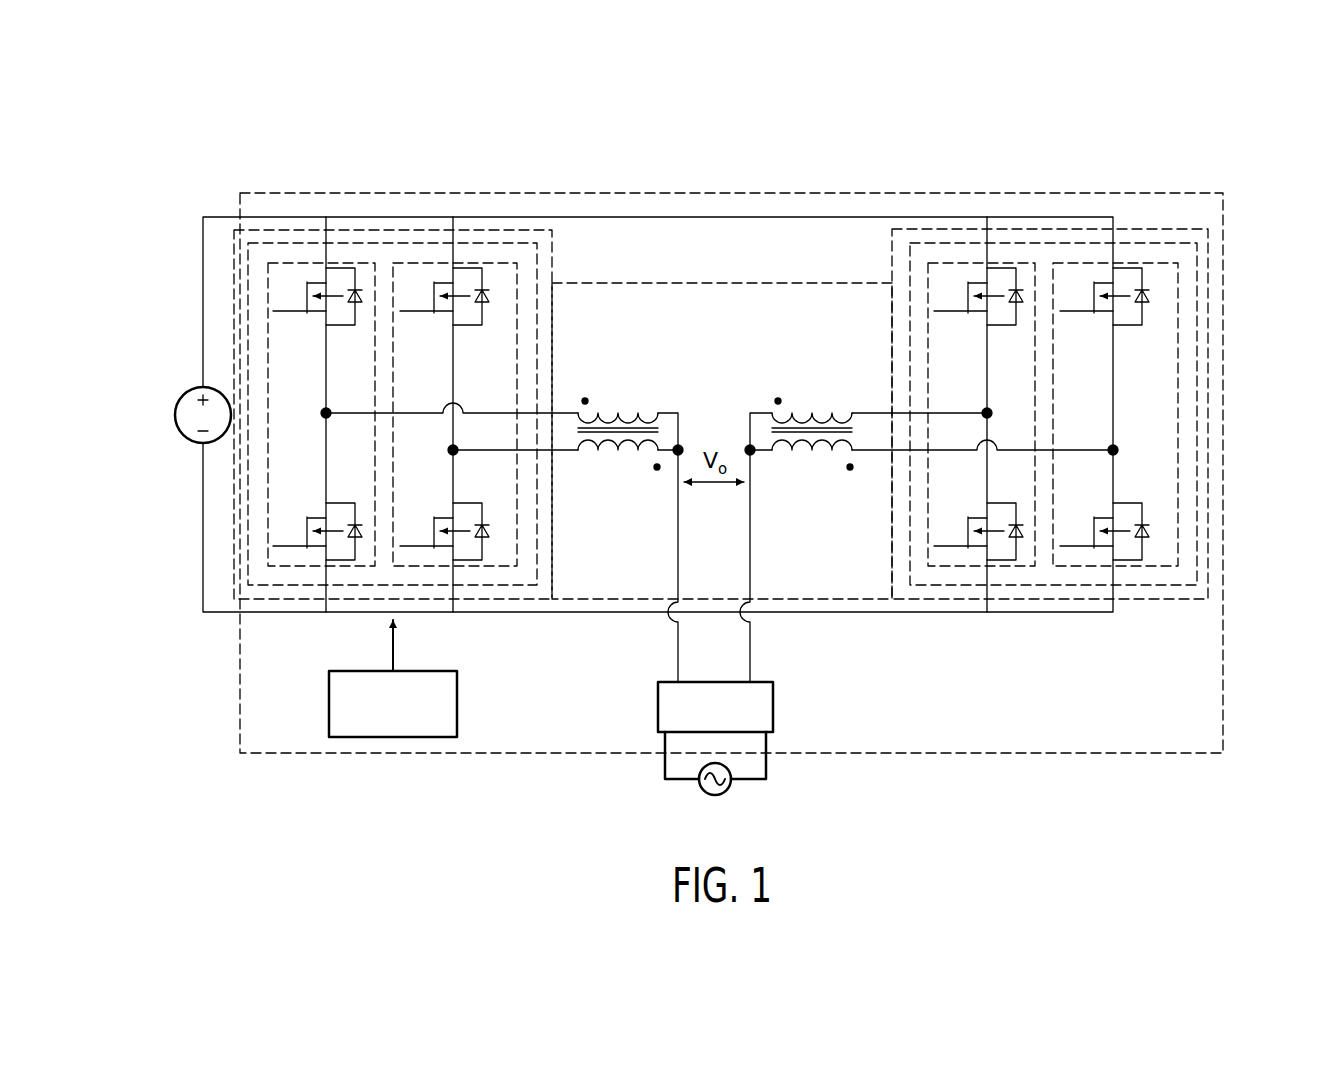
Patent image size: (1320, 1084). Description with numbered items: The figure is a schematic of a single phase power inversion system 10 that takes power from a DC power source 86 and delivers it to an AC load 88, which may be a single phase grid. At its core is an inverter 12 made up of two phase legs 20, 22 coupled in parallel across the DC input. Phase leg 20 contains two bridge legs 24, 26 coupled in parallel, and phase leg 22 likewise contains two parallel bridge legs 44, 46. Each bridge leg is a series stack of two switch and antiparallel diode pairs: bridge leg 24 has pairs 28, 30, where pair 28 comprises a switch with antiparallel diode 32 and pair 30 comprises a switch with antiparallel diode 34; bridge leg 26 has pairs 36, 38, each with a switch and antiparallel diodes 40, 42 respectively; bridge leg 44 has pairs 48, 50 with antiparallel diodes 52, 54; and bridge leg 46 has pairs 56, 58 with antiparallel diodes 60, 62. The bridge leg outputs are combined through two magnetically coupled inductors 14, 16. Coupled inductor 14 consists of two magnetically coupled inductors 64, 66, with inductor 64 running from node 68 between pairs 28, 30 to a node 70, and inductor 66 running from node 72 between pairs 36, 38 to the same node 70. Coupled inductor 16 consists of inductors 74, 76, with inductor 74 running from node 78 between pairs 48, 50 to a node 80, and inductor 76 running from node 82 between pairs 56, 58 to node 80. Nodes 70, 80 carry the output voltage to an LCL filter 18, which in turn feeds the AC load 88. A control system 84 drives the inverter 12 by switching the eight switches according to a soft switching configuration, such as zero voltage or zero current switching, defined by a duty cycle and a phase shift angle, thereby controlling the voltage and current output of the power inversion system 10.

The single phase power inversion system 10 is at (452, 192).
The inverter 12 is at (1074, 396).
The magnetically coupled inductor 14 is at (619, 428).
The magnetically coupled inductor 16 is at (805, 421).
The LCL filter 18 is at (773, 707).
The phase leg 20 is at (540, 383).
The phase leg 22 is at (1158, 242).
The bridge leg 24 is at (270, 287).
The bridge leg 26 is at (537, 283).
The switch and antiparallel diode pair 28 is at (301, 322).
The switch and antiparallel diode pair 30 is at (306, 512).
The antiparallel diode 32 is at (364, 304).
The antiparallel diode 34 is at (362, 530).
The switch and antiparallel diode pair 36 is at (428, 322).
The switch and antiparallel diode pair 38 is at (430, 512).
The antiparallel diode 40 is at (487, 300).
The antiparallel diode 42 is at (488, 528).
The bridge leg 44 is at (914, 390).
The bridge leg 46 is at (1178, 280).
The switch and antiparallel diode pair 48 is at (965, 322).
The switch and antiparallel diode pair 50 is at (979, 550).
The antiparallel diode 52 is at (1023, 303).
The antiparallel diode 54 is at (1020, 528).
The switch and antiparallel diode pair 56 is at (1090, 322).
The switch and antiparallel diode pair 58 is at (1104, 550).
The antiparallel diode 60 is at (1148, 299).
The antiparallel diode 62 is at (1147, 529).
The magnetically coupled inductor 64 is at (607, 414).
The magnetically coupled inductor 66 is at (588, 443).
The node 68 is at (325, 413).
The node 70 is at (679, 448).
The node 72 is at (453, 450).
The magnetically coupled inductor 74 is at (823, 414).
The magnetically coupled inductor 76 is at (781, 443).
The node 78 is at (985, 415).
The node 80 is at (749, 448).
The node 82 is at (1110, 450).
The control system 84 is at (457, 703).
The DC power source 86 is at (183, 393).
The AC load 88 is at (728, 790).